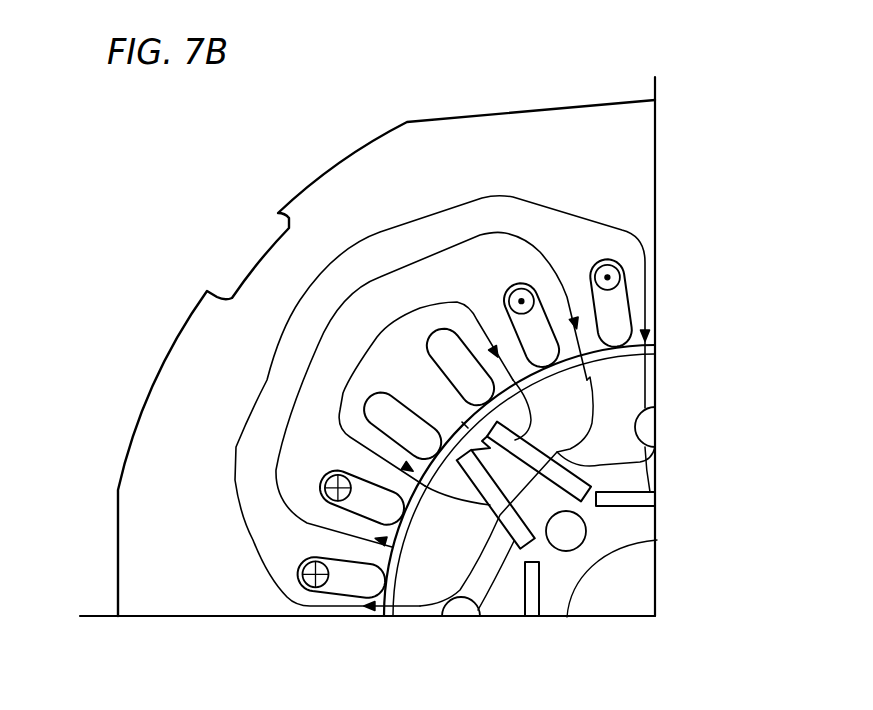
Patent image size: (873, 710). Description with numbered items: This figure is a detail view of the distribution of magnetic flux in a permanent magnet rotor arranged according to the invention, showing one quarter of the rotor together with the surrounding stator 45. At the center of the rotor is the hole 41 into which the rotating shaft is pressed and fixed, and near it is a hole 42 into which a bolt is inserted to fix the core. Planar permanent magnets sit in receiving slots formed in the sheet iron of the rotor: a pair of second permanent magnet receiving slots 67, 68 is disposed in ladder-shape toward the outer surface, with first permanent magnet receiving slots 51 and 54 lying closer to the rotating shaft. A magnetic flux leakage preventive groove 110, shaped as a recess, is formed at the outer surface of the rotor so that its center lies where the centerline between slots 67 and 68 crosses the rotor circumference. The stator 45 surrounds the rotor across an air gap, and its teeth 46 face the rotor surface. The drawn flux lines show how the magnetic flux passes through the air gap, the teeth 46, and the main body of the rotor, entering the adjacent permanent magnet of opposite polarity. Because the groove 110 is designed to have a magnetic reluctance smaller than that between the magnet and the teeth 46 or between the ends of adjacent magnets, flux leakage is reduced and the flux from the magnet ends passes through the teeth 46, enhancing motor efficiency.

The magnetic flux leakage preventive groove 110 is at (468, 428).
The stator 45 is at (163, 450).
The teeth 46 is at (372, 555).
The second permanent magnet receiving slot 68 is at (562, 451).
The second permanent magnet receiving slot 67 is at (493, 512).
The first permanent magnet receiving slot 51 is at (640, 500).
The hole 42 is at (567, 531).
The hole 41 is at (637, 587).
The first permanent magnet receiving slot 54 is at (533, 601).